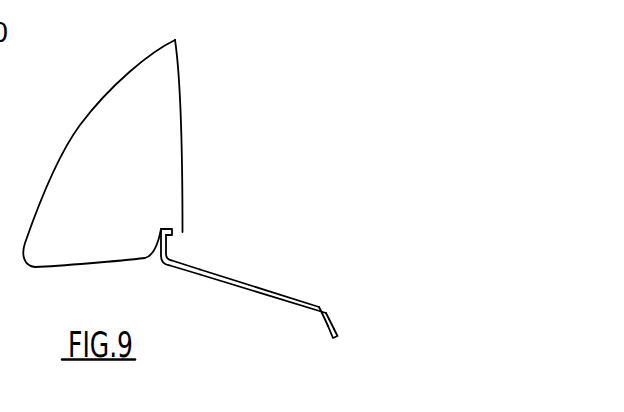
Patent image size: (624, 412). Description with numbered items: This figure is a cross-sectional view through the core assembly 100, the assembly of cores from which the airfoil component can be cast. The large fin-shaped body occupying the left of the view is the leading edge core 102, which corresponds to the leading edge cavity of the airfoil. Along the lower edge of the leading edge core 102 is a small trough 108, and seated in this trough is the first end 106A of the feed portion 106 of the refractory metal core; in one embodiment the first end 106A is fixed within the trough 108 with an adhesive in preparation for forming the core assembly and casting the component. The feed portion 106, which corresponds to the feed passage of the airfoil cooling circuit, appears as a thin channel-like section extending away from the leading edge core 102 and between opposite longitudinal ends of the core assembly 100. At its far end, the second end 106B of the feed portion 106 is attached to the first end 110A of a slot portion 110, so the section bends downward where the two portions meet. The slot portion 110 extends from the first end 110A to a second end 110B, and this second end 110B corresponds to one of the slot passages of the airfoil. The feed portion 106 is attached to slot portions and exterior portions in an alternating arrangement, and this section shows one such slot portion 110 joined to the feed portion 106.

The core assembly 100 is at (268, 106).
The leading edge core 102 is at (195, 59).
The feed portion 106 is at (262, 259).
The first end of the feed portion 106A is at (177, 234).
The second end of the feed portion 106B is at (328, 310).
The trough 108 is at (163, 228).
The slot portion 110 is at (345, 318).
The first end of the slot portion 110A is at (332, 313).
The second end of the slot portion 110B is at (337, 340).